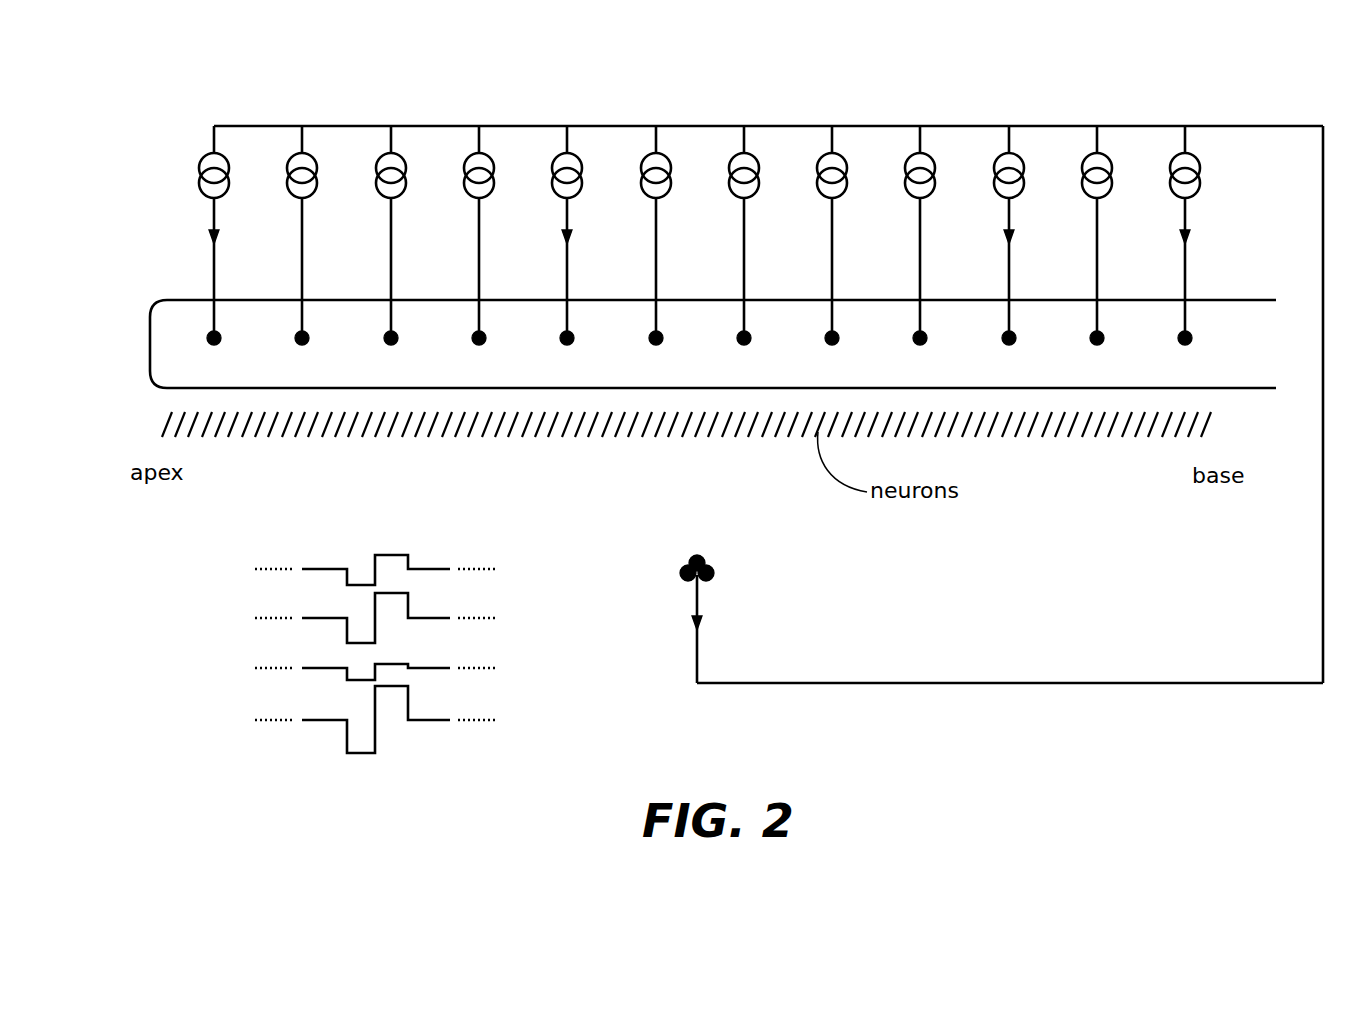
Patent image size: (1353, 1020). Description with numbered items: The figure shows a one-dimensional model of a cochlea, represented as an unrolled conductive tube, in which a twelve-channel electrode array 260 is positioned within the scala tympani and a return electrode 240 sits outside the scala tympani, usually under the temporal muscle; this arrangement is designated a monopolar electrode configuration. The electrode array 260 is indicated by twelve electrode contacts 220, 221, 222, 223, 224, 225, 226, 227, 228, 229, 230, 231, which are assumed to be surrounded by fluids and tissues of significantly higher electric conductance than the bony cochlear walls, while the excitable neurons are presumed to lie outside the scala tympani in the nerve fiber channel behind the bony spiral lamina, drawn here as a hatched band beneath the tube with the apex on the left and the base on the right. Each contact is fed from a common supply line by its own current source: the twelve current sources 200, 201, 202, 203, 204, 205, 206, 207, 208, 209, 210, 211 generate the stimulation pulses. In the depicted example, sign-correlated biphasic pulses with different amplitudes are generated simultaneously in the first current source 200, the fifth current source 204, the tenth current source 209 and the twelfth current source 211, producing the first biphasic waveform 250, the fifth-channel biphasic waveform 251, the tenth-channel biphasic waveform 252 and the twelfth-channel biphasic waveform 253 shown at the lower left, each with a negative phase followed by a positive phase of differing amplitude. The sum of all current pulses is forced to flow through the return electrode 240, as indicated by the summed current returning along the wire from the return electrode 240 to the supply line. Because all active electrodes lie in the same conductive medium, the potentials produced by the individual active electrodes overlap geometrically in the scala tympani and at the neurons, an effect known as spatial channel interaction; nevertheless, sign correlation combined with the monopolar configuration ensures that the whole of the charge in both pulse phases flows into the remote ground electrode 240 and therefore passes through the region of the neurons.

The current source Q1 200 is at (212, 152).
The current source Q2 201 is at (300, 152).
The current source Q3 202 is at (389, 152).
The current source Q4 203 is at (477, 152).
The current source Q5 204 is at (565, 152).
The current source Q6 205 is at (654, 152).
The current source Q7 206 is at (742, 152).
The current source Q8 207 is at (830, 152).
The current source Q9 208 is at (918, 152).
The current source Q10 209 is at (1007, 152).
The current source Q11 210 is at (1095, 152).
The current source Q12 211 is at (1183, 152).
The electrode contact E1 220 is at (210, 333).
The electrode contact E2 221 is at (298, 333).
The electrode contact E3 222 is at (387, 333).
The electrode contact E4 223 is at (475, 333).
The electrode contact E5 224 is at (563, 333).
The electrode contact E6 225 is at (652, 333).
The electrode contact E7 226 is at (740, 333).
The electrode contact E8 227 is at (828, 333).
The electrode contact E9 228 is at (916, 333).
The electrode contact E10 229 is at (1005, 333).
The electrode contact E11 230 is at (1093, 333).
The electrode contact E12 231 is at (1181, 333).
The return electrode 240 is at (698, 556).
The biphasic waveform i1(t) 250 is at (183, 562).
The biphasic waveform i5(t) 251 is at (178, 618).
The biphasic waveform i10(t) 252 is at (178, 668).
The biphasic waveform i12(t) 253 is at (178, 720).
The electrode array 260 is at (150, 341).